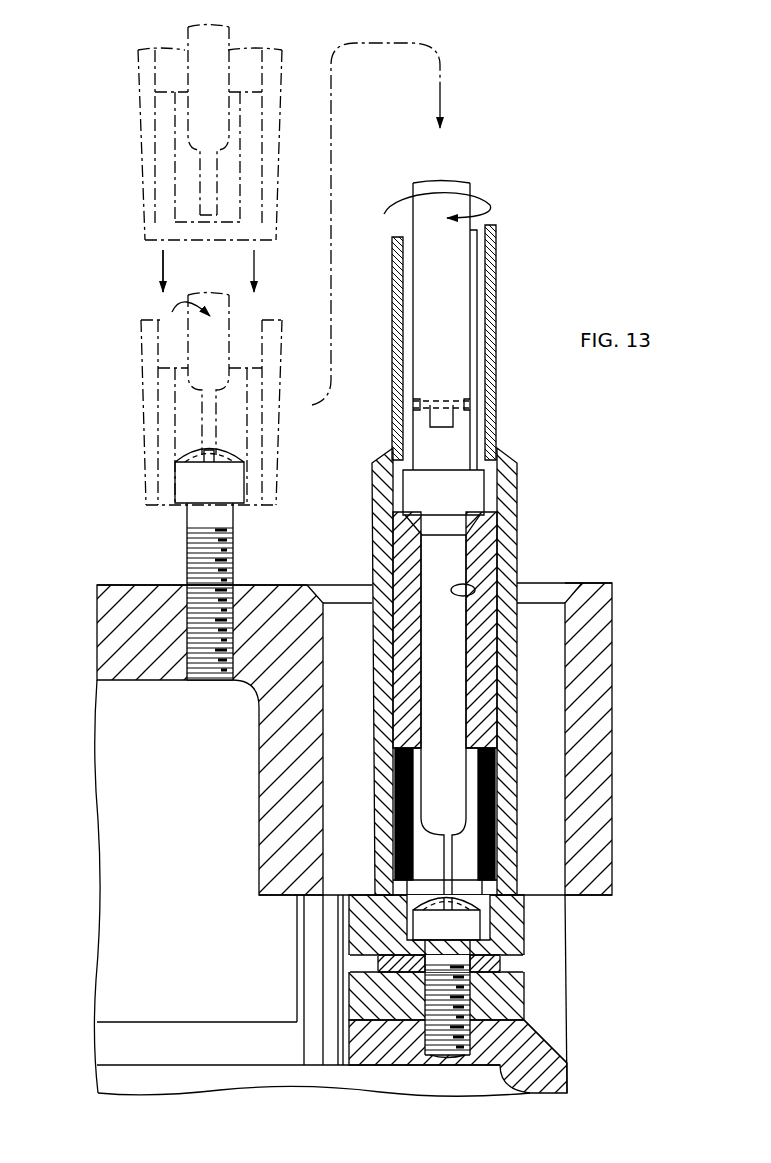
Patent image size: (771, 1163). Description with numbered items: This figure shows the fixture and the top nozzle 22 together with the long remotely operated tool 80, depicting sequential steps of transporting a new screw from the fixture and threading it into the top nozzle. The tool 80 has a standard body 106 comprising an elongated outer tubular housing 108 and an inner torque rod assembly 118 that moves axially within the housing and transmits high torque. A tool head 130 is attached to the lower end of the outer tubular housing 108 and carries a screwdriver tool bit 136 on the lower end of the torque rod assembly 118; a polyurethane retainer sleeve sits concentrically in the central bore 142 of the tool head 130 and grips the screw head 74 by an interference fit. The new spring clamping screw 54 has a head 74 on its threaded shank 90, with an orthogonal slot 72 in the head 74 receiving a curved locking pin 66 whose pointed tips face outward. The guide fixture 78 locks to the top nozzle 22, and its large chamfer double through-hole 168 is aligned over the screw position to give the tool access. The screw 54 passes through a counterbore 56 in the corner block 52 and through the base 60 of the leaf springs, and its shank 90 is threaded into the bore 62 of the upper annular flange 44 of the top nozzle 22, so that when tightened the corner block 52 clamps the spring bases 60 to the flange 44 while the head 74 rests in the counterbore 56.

The top nozzle 22 is at (575, 1068).
The upper annular flange 44 is at (540, 1033).
The corner block 52 is at (524, 985).
The spring clamping screw 54 is at (186, 568).
The counterbore 56 is at (383, 905).
The base of leaf springs 60 is at (382, 966).
The bore 62 is at (430, 1045).
The locking pin 66 is at (205, 452).
The slot 72 is at (215, 472).
The screw head 74 is at (241, 486).
The guide fixture 78 is at (261, 586).
The tool 80 is at (497, 280).
The threaded shank 90 is at (188, 548).
The standard body 106 is at (497, 393).
The outer tubular housing 108 is at (497, 325).
The inner torque rod assembly 118 is at (470, 445).
The tool head 130 is at (141, 188).
The tool bit 136 is at (193, 43).
The central bore 142 is at (472, 591).
The chamfer double through-hole 168 is at (335, 603).